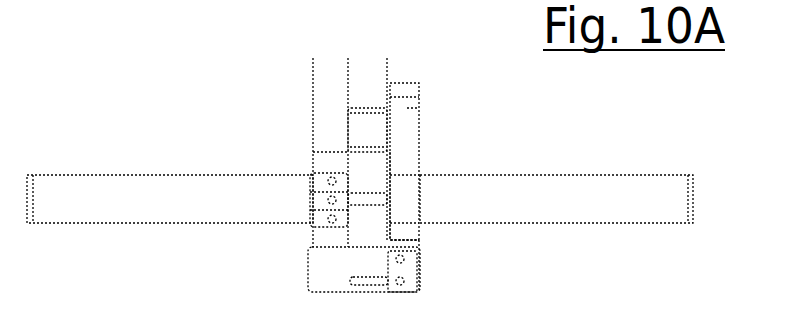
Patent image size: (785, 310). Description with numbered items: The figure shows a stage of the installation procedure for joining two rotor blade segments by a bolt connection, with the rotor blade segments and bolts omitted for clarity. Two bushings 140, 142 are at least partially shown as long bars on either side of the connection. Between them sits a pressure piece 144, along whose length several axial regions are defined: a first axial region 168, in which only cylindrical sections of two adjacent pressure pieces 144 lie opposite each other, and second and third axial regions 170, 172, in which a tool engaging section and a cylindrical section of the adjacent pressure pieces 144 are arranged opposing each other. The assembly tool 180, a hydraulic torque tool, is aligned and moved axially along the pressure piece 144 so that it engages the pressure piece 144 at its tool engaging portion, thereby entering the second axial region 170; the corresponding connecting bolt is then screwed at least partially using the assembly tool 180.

The bushing 140 is at (132, 195).
The bushing 142 is at (545, 192).
The pressure piece 144 is at (328, 266).
The first axial region 168 is at (350, 72).
The second axial region 170 is at (392, 72).
The third axial region 172 is at (348, 72).
The assembly tool 180 is at (407, 177).